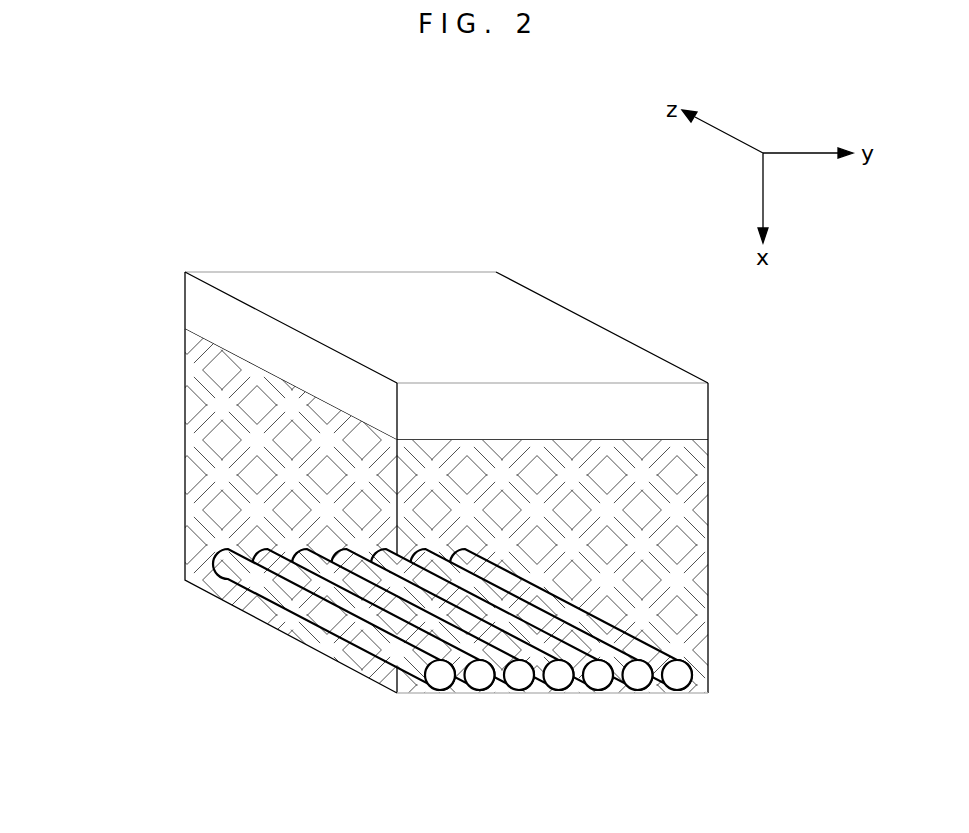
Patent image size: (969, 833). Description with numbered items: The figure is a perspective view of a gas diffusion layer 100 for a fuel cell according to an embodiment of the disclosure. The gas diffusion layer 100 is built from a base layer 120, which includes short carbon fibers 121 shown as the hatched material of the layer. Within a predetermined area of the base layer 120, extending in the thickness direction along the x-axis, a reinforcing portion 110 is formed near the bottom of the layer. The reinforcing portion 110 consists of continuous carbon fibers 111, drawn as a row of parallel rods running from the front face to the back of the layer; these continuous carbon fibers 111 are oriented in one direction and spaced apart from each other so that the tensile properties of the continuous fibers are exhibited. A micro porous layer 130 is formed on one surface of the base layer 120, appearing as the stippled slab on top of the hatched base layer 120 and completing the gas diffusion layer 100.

The gas diffusion layer 100 is at (321, 251).
The reinforcing portion 110 is at (730, 660).
The continuous carbon fibers 111 is at (559, 680).
The base layer 120 is at (808, 440).
The short carbon fibers 121 is at (212, 434).
The micro porous layer 130 is at (730, 383).